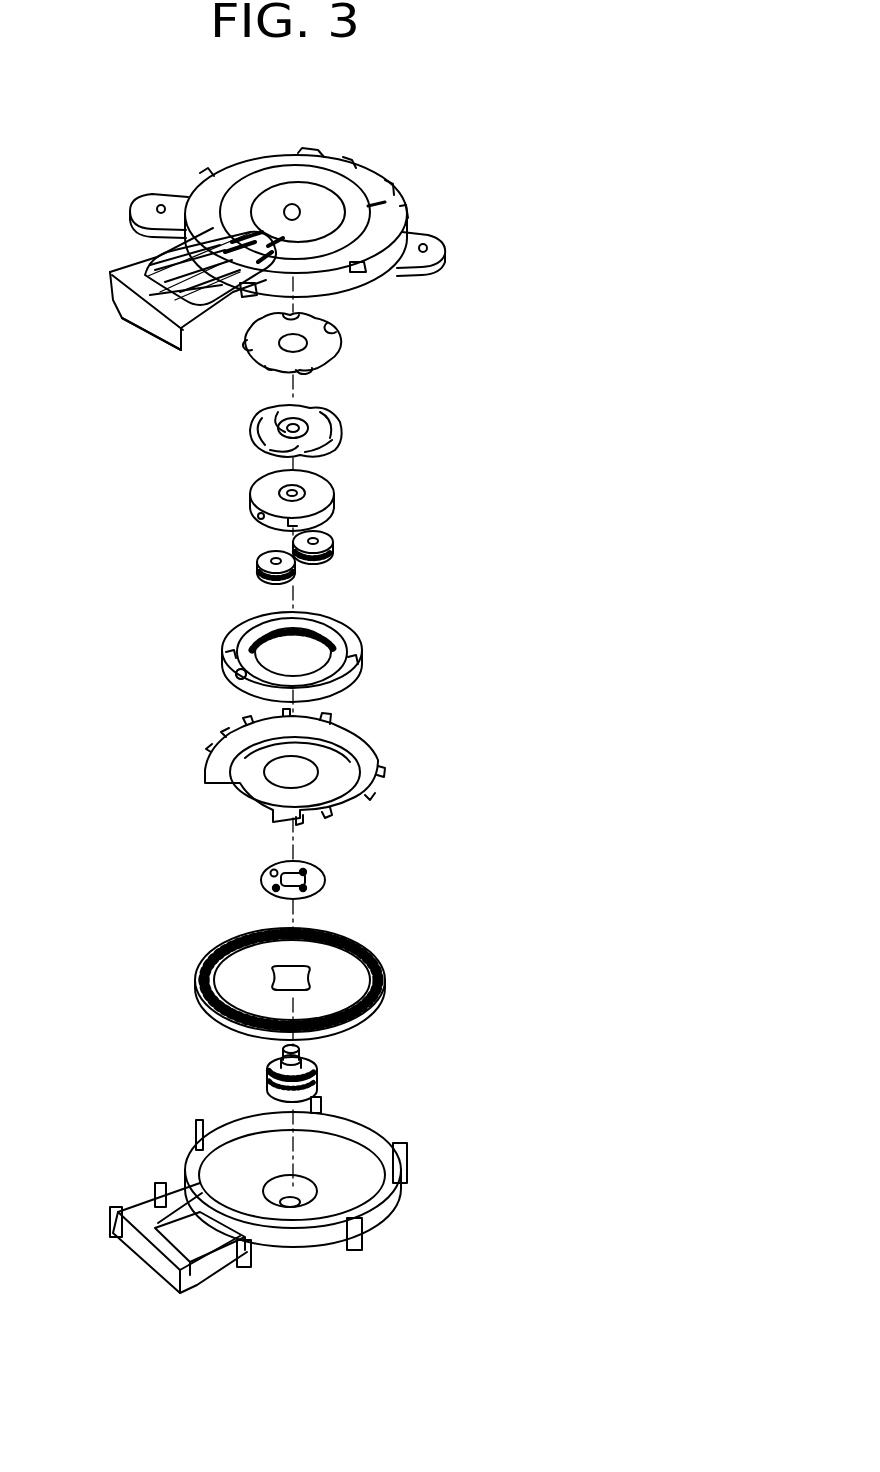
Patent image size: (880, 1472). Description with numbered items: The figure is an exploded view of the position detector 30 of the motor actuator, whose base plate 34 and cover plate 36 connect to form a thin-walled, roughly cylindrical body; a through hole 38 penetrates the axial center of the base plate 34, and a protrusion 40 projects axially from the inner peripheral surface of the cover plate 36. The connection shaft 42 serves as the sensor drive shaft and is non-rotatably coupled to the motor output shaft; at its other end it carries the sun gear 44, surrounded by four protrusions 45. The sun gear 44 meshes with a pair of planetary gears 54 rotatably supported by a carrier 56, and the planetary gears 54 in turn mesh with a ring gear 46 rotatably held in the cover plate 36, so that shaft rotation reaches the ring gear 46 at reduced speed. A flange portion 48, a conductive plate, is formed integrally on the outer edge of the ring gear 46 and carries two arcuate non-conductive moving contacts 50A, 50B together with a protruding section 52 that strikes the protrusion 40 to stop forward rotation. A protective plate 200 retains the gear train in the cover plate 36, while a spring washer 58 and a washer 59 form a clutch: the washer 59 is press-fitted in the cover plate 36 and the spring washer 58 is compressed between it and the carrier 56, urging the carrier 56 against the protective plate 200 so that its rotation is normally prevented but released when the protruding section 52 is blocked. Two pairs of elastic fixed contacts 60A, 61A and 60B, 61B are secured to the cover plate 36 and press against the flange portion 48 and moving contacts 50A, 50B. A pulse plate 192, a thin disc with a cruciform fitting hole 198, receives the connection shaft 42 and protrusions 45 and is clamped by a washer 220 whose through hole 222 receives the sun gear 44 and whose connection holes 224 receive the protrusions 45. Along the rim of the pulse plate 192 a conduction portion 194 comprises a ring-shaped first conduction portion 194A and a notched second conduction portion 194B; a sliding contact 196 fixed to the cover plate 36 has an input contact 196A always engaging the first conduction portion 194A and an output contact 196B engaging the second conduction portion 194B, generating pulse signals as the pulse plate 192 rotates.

The position detector 30 is at (463, 172).
The cover plate 36 is at (372, 170).
The protrusion 40 is at (388, 203).
The fixed contact 60A is at (236, 238).
The fixed contact 60B is at (232, 238).
The fixed contact 61A is at (265, 245).
The fixed contact 61B is at (280, 232).
The sliding contact 196 is at (242, 392).
The input contact 196A is at (200, 318).
The output contact 196B is at (236, 278).
The washer 59 is at (340, 338).
The spring washer 58 is at (340, 428).
The carrier 56 is at (336, 490).
The planetary gears 54 is at (336, 546).
The protruding section 52 is at (355, 633).
The ring gear 46 is at (345, 646).
The flange portion 48 is at (350, 670).
The moving contact 50A is at (238, 677).
The moving contact 50B is at (238, 677).
The protective plate 200 is at (380, 770).
The washer 220 is at (318, 876).
The through hole 222 is at (268, 872).
The connection holes 224 is at (308, 871).
The conduction portion 194 is at (252, 982).
The first conduction portion 194A is at (207, 961).
The second conduction portion 194B is at (202, 992).
The pulse plate 192 is at (380, 962).
The fitting hole 198 is at (310, 988).
The connection shaft 42 is at (320, 1070).
The sun gear 44 is at (283, 1060).
The protrusions 45 is at (318, 1060).
The base plate 34 is at (380, 1238).
The through hole 38 is at (294, 1206).